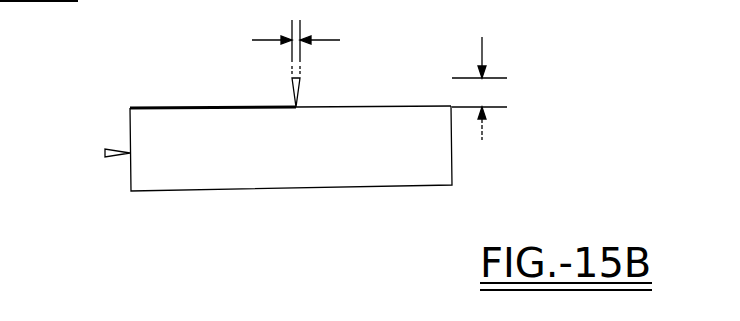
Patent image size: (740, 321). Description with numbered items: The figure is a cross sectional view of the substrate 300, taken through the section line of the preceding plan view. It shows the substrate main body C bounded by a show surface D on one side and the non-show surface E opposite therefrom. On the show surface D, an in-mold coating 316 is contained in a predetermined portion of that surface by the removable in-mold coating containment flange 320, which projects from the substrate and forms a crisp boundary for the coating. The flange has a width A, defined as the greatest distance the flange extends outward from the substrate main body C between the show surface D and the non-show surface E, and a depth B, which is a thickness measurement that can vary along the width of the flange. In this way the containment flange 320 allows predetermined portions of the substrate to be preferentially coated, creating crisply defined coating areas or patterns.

The substrate body 300 is at (146, 92).
The in-mold coating 316 is at (210, 106).
The removable in-mold coating containment flange 320 is at (301, 88).
The width A is at (479, 88).
The depth B is at (297, 36).
The substrate main body C is at (286, 170).
The show surface D is at (404, 102).
The non-show surface E is at (238, 196).